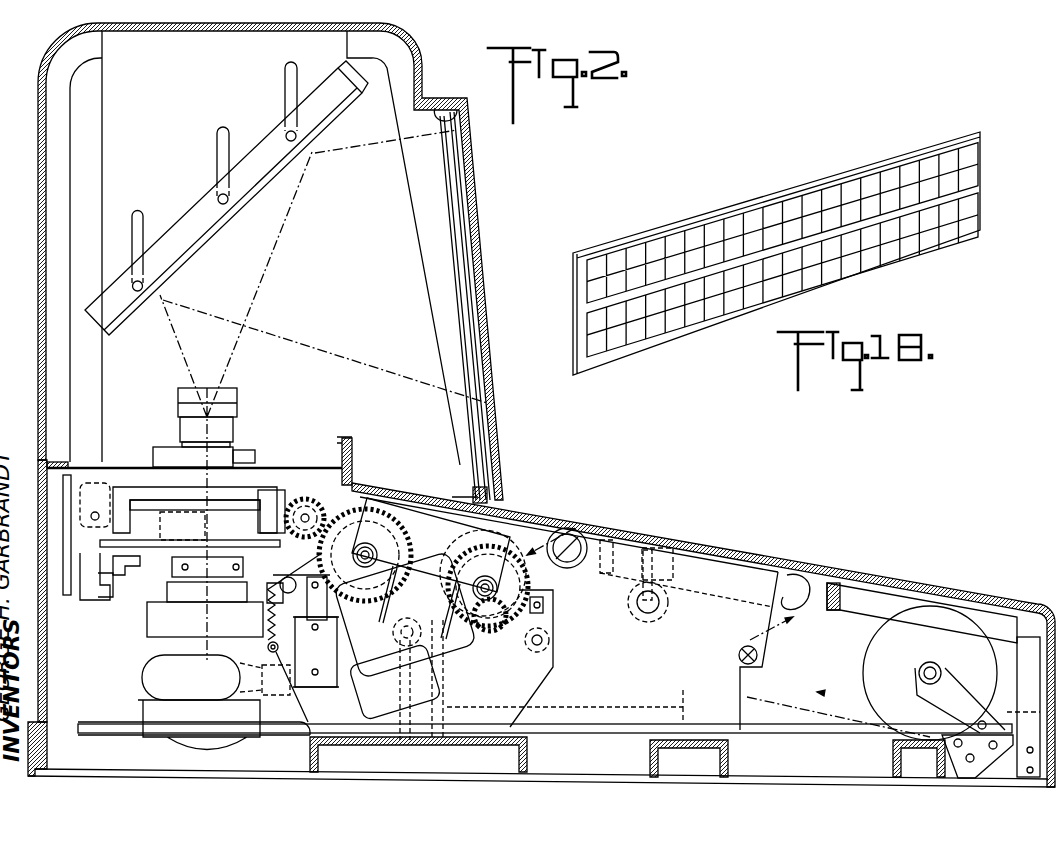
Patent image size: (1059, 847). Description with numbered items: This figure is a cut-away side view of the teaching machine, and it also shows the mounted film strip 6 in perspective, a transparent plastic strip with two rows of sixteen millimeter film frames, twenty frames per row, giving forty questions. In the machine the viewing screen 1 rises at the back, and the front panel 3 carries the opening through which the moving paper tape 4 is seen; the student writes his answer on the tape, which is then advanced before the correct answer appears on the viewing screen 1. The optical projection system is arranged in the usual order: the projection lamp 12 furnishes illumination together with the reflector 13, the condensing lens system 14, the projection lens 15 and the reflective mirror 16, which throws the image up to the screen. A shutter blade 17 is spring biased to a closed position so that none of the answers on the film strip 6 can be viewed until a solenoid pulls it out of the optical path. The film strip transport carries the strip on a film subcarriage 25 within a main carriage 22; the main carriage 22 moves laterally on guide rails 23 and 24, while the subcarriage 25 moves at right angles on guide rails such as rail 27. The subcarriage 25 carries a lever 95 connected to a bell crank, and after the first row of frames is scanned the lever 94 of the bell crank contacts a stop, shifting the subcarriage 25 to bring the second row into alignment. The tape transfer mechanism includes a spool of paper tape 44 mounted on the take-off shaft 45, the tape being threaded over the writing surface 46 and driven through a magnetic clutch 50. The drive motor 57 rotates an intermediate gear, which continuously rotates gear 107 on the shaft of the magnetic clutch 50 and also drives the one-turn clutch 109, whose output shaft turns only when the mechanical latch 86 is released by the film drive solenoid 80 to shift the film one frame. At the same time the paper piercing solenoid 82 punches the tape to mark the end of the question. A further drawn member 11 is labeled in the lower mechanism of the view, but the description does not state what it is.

In FIG. 2, the viewing screen 1 is at (490, 284).
In FIG. 2, the front panel 3 is at (541, 612).
In FIG. 2, the paper tape 4 is at (760, 683).
In FIG. 18, the film strip 6 is at (765, 215).
In FIG. 2, the frame 11 is at (553, 680).
In FIG. 2, the projection lamp 12 is at (152, 676).
In FIG. 2, the reflector 13 is at (218, 741).
In FIG. 2, the condensing lens system 14 is at (172, 596).
In FIG. 2, the projection lens 15 is at (238, 424).
In FIG. 2, the reflective mirror 16 is at (236, 237).
In FIG. 2, the shutter blade 17 is at (172, 566).
In FIG. 2, the main carriage 22 is at (273, 490).
In FIG. 2, the guide rail 23 is at (95, 512).
In FIG. 2, the guide rail 24 is at (313, 517).
In FIG. 2, the film subcarriage 25 is at (176, 518).
In FIG. 2, the guide rail 27 is at (140, 515).
In FIG. 2, the spool of paper tape 44 is at (921, 669).
In FIG. 2, the take-off shaft 45 is at (919, 673).
In FIG. 2, the writing surface 46 is at (733, 554).
In FIG. 2, the magnetic clutch 50 is at (553, 598).
In FIG. 2, the drive motor 57 is at (458, 655).
In FIG. 2, the film drive solenoid 80 is at (332, 682).
In FIG. 2, the paper piercing solenoid 82 is at (645, 620).
In FIG. 2, the mechanical latch 86 is at (285, 621).
In FIG. 2, the lever of bell crank 94 is at (107, 590).
In FIG. 2, the lever 95 is at (113, 565).
In FIG. 2, the gear 107 is at (533, 573).
In FIG. 2, the one-turn clutch 109 is at (370, 528).